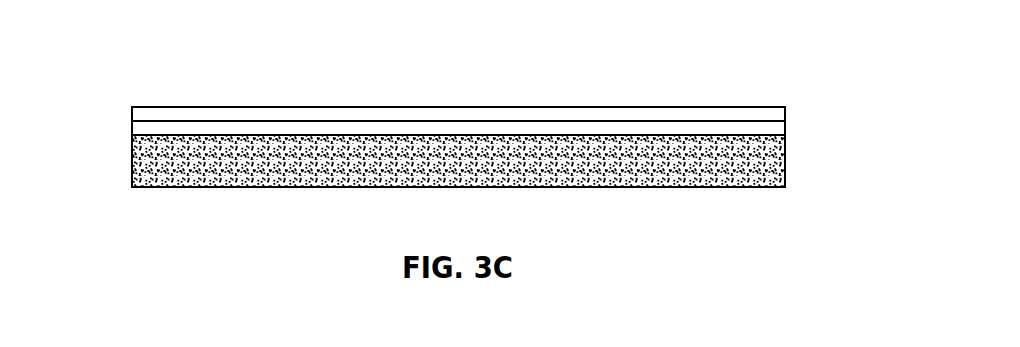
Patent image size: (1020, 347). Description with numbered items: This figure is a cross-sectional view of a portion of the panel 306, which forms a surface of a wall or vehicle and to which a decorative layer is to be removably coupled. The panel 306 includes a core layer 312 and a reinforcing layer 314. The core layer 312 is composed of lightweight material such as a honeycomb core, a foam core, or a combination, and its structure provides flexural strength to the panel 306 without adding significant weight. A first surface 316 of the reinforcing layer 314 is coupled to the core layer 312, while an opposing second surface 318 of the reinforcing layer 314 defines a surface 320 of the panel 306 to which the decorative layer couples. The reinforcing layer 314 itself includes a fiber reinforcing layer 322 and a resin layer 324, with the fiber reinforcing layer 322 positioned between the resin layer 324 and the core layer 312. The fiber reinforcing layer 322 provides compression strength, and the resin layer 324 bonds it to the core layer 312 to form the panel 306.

The panel 306 is at (726, 49).
The core layer 312 is at (786, 170).
The reinforcing layer 314 is at (115, 122).
The first surface 316 is at (648, 135).
The second surface 318 is at (608, 107).
The surface 320 is at (190, 107).
The fiber reinforcing layer 322 is at (786, 129).
The resin layer 324 is at (786, 113).